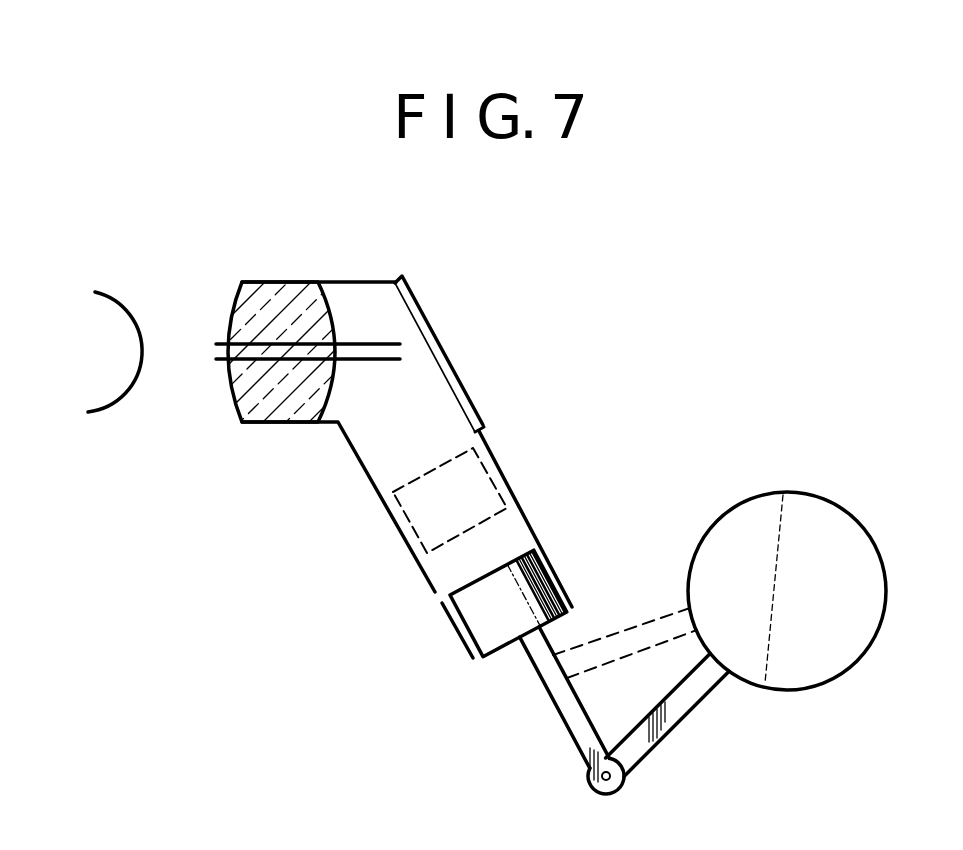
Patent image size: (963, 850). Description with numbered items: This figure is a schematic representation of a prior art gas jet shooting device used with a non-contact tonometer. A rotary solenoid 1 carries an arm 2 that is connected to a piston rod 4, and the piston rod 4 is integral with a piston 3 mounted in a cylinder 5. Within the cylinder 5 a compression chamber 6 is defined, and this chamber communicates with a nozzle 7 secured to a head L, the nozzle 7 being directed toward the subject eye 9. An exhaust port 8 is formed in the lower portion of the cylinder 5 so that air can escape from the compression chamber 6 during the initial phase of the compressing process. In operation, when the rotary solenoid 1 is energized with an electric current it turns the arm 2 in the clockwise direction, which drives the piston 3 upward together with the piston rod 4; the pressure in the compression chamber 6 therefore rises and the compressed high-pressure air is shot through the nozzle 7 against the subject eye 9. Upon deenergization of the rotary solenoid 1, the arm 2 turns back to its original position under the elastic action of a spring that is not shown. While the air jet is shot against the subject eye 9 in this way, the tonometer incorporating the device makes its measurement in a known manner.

The rotary solenoid 1 is at (795, 692).
The arm 2 is at (680, 721).
The piston 3 is at (556, 571).
The piston rod 4 is at (572, 736).
The cylinder 5 is at (368, 477).
The compression chamber 6 is at (457, 420).
The nozzle 7 is at (383, 338).
The exhaust port 8 is at (437, 598).
The subject eye 9 is at (118, 316).
The head L is at (280, 282).